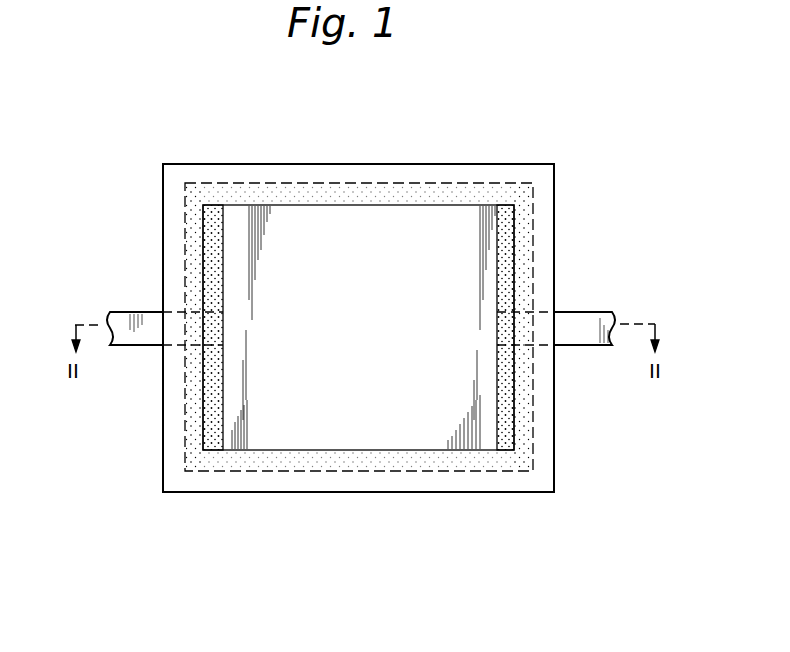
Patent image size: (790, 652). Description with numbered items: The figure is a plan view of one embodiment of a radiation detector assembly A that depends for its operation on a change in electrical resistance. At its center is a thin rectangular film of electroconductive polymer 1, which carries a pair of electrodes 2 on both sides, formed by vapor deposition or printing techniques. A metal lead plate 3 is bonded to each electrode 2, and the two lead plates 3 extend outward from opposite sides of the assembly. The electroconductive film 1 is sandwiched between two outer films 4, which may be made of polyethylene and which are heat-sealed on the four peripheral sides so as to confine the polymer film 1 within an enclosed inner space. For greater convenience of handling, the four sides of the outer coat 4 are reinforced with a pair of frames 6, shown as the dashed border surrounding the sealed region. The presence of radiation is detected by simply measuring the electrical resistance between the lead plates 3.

The capacitor assembly A is at (531, 143).
The electroconductive polymer film 1 is at (360, 435).
The electrode 2 is at (216, 426).
The metal lead plate 3 is at (146, 336).
The outer film 4 is at (427, 432).
The frame 6 is at (173, 418).